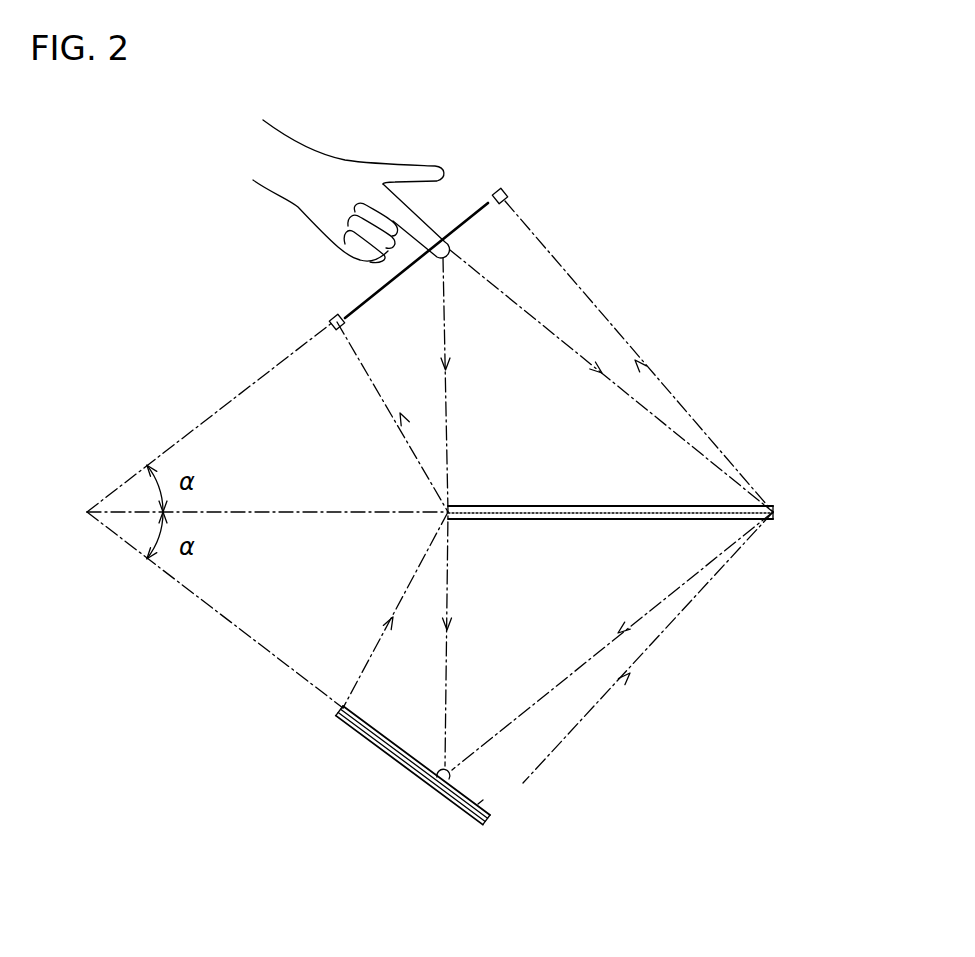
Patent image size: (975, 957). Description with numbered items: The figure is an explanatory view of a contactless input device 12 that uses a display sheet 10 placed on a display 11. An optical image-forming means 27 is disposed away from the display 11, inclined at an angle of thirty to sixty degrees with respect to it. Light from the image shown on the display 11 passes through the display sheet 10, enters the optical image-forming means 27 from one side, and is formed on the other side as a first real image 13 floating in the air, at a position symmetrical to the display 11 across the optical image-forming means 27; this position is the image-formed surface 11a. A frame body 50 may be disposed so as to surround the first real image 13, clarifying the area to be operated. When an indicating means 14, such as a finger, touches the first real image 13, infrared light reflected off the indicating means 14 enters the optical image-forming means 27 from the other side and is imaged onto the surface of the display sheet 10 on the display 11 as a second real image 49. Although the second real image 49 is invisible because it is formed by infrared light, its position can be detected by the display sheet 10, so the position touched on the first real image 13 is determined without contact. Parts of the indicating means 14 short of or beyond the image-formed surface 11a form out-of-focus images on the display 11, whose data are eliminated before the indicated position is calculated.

The display sheet 10 is at (483, 800).
The display 11 is at (396, 777).
The image-formed surface 11a is at (358, 300).
The contactless input device 12 is at (633, 167).
The first real image 13 is at (473, 207).
The indicating means 14 is at (417, 227).
The optical image-forming means 27 is at (775, 493).
The second real image 49 is at (450, 766).
The frame body 50 is at (510, 190).